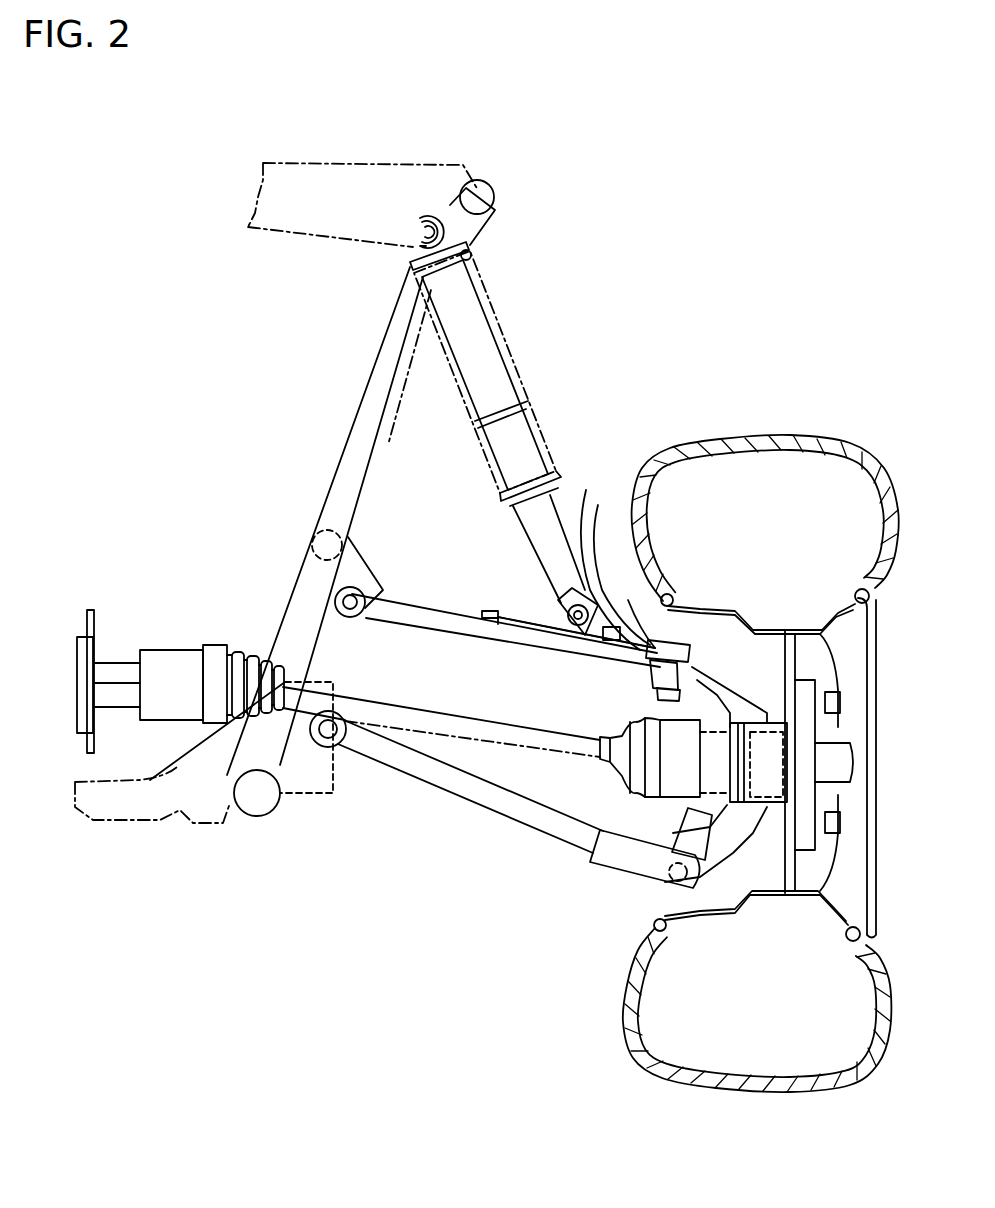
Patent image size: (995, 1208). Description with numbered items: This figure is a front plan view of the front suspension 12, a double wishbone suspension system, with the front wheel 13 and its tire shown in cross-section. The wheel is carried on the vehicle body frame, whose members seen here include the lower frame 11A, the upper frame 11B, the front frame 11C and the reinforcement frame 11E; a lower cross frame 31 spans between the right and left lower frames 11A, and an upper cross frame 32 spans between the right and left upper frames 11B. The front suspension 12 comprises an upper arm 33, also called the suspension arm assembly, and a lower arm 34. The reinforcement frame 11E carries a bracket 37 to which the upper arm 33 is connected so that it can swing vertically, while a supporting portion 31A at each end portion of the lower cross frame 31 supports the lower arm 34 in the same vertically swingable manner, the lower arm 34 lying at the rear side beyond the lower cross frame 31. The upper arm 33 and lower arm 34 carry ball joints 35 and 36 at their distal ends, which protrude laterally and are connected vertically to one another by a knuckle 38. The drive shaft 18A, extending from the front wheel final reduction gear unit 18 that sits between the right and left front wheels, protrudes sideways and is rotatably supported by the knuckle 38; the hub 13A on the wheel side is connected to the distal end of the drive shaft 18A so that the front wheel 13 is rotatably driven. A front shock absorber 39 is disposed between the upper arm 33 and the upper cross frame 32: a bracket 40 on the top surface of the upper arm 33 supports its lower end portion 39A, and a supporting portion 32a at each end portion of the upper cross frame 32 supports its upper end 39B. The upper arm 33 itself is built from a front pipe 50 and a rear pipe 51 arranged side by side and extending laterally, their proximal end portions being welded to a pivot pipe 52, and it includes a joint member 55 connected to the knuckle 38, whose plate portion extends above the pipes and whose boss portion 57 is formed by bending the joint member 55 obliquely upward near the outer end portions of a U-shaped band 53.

The front suspension 12 is at (700, 356).
The front wheel 13 is at (777, 434).
The hub 13A is at (805, 615).
The lower frame 11A is at (245, 820).
The upper frame 11B is at (468, 196).
The front frame 11C is at (357, 447).
The reinforcement frame 11E is at (325, 535).
The front wheel final reduction gear unit 18 is at (100, 650).
The drive shaft 18A is at (425, 740).
The lower cross frame 31 is at (178, 808).
The supporting portion 31A is at (322, 792).
The upper cross frame 32 is at (385, 178).
The supporting portion 32a is at (470, 238).
The upper arm 33 is at (413, 600).
The lower arm 34 is at (492, 803).
The ball joint 35 is at (680, 660).
The ball joint 36 is at (655, 880).
The bracket 37 is at (362, 573).
The knuckle 38 is at (726, 695).
The front shock absorber 39 is at (487, 355).
The lower end portion 39A is at (565, 530).
The upper end 39B is at (420, 244).
The bracket 40 is at (578, 580).
The front pipe 50 is at (440, 628).
The rear pipe 51 is at (576, 632).
The pivot pipe 52 is at (350, 630).
The U-shaped band 53 is at (648, 675).
The joint member 55 is at (530, 620).
The boss portion 57 is at (665, 642).